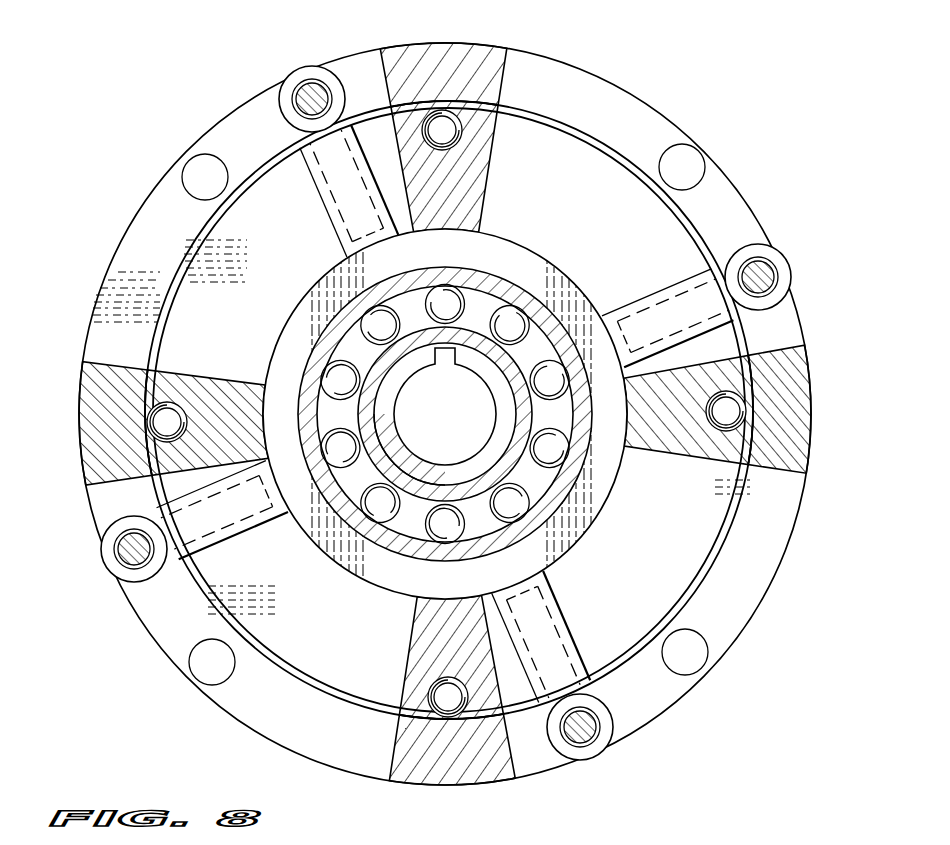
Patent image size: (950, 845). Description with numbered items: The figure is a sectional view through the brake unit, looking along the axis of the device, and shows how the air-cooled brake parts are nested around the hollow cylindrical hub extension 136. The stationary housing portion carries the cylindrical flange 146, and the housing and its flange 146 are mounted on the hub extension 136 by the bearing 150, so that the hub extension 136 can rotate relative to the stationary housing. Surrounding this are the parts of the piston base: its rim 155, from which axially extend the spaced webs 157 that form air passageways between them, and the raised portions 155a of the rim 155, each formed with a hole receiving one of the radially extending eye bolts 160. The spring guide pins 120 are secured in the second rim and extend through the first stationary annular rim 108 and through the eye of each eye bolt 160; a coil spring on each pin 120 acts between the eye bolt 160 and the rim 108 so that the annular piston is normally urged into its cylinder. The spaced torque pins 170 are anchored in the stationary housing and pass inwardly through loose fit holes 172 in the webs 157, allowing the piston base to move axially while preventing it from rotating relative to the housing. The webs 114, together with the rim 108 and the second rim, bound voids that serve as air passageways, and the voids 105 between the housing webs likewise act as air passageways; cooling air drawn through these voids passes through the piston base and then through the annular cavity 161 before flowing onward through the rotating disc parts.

The voids 105 is at (163, 197).
The first stationary annular rim 108 is at (642, 105).
The webs 114 is at (453, 53).
The spring guide pins 120 is at (313, 82).
The hub extension 136 is at (497, 455).
The cylindrical flange 146 is at (507, 283).
The bearing 150 is at (517, 328).
The rim 155 is at (707, 207).
The raised portion 155a is at (330, 205).
The webs 157 is at (493, 185).
The eye bolts 160 is at (284, 84).
The annular cavity 161 is at (600, 325).
The torque pins 170 is at (455, 122).
The loose fit holes 172 is at (462, 132).